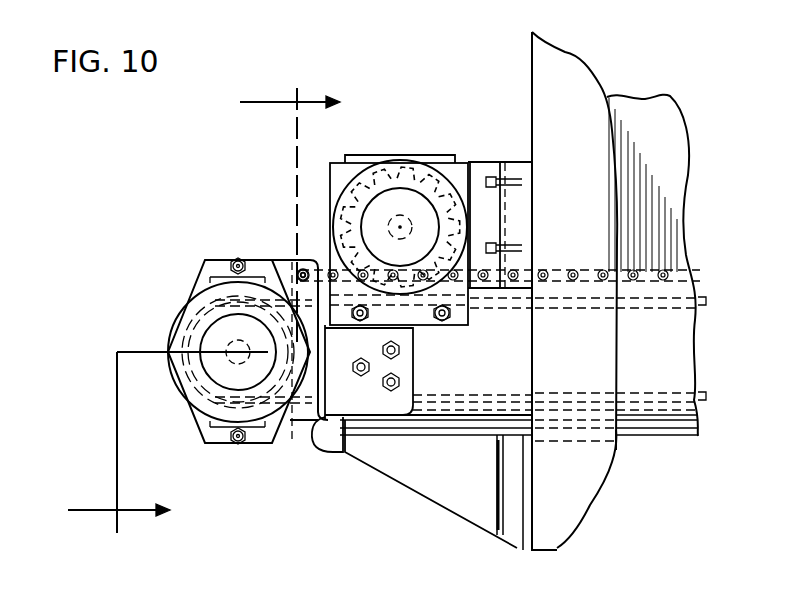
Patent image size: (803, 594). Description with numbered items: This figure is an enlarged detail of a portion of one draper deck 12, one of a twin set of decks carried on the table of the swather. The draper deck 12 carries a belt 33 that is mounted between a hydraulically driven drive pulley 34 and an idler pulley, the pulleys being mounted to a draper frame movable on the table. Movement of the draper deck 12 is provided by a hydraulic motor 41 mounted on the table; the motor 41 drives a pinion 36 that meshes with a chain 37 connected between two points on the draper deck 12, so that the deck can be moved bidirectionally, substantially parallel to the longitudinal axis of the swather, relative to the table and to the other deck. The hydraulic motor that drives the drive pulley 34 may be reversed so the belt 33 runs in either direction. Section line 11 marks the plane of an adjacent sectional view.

The section line 11- 11 is at (189, 310).
The draper deck 12 is at (485, 72).
The belt 33 is at (698, 300).
The drive pulley 34 is at (270, 380).
The pinion 36 is at (407, 177).
The chain 37 is at (652, 265).
The hydraulic motor 41 is at (436, 163).